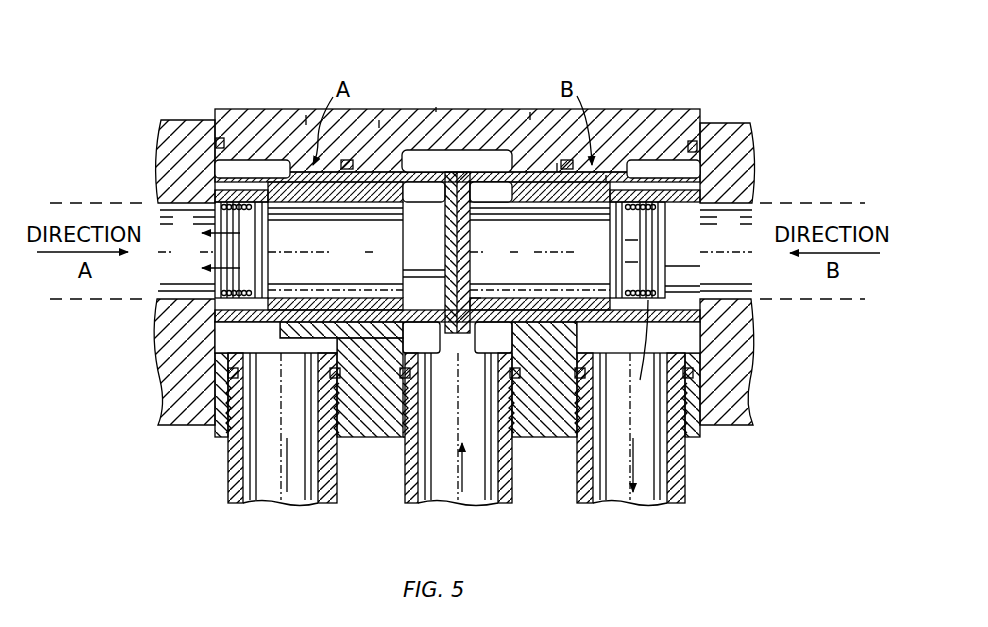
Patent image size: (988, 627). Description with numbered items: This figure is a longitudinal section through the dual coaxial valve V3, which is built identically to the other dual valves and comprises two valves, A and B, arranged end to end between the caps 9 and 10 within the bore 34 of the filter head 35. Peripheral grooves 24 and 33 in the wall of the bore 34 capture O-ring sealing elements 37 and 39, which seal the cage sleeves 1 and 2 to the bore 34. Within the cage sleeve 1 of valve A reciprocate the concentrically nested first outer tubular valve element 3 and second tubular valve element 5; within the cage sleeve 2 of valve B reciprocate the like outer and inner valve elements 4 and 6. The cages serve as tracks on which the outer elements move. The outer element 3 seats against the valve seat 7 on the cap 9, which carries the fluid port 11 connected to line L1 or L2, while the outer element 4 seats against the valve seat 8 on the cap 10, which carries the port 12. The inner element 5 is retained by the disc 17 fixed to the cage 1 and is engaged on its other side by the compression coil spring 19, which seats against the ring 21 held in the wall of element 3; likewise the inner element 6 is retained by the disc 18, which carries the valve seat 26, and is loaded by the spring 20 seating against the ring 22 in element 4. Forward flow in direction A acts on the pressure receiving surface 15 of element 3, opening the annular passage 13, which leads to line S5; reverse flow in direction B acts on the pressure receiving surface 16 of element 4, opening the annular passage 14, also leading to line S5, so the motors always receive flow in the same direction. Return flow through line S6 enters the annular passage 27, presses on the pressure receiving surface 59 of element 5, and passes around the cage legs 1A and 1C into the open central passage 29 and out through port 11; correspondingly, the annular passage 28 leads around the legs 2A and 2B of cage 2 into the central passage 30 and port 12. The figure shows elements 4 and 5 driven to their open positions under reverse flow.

The cage sleeve 1 is at (400, 127).
The leg of cage 1A is at (243, 120).
The leg of cage 1C is at (423, 273).
The cage sleeve 2 is at (530, 112).
The leg of cage 2A is at (662, 115).
The leg of cage 2B is at (676, 278).
The first outer tubular valve element 3 is at (291, 158).
The first outer valve element 4 is at (540, 252).
The second tubular valve element 5 is at (348, 207).
The second tubular valve element 6 is at (570, 207).
The valve seat 7 is at (213, 190).
The valve seat 8 is at (706, 215).
The cap 9 is at (165, 355).
The cap 10 is at (729, 122).
The fluid port 11 is at (218, 300).
The port 12 is at (709, 294).
The annular passage 13 is at (238, 344).
The annular passage 14 is at (655, 344).
The pressure receiving surface 15 is at (220, 210).
The fluid pressure receiving surface 16 is at (656, 210).
The disc 17 is at (448, 236).
The disc 18 is at (540, 232).
The compression coil spring 19 is at (335, 251).
The compression coil spring 20 is at (613, 233).
The ring 21 is at (222, 312).
The ring 22 is at (648, 300).
The peripheral groove 24 is at (346, 159).
The valve seat 26 is at (481, 289).
The annular passage 27 is at (458, 156).
The annular passage 28 is at (459, 361).
The open central passage 29 is at (336, 274).
The open central passage 30 is at (556, 274).
The peripheral groove 33 is at (570, 160).
The bore 34 is at (606, 175).
The filter head 35 is at (306, 115).
The O-ring sealing element 37 is at (379, 120).
The O-ring sealing element 39 is at (557, 163).
The pressure receiving surface 59 is at (435, 397).
The dual coaxial valve V3 is at (436, 107).
The line L1 is at (790, 202).
The line L2 is at (113, 200).
The line S5 is at (226, 483).
The line S6 is at (402, 492).